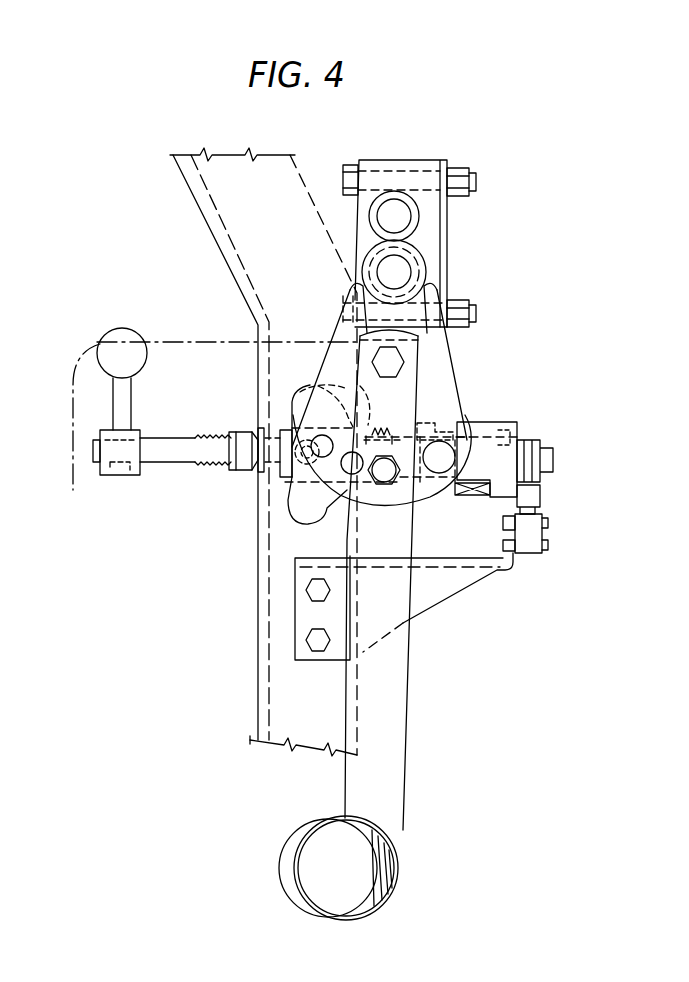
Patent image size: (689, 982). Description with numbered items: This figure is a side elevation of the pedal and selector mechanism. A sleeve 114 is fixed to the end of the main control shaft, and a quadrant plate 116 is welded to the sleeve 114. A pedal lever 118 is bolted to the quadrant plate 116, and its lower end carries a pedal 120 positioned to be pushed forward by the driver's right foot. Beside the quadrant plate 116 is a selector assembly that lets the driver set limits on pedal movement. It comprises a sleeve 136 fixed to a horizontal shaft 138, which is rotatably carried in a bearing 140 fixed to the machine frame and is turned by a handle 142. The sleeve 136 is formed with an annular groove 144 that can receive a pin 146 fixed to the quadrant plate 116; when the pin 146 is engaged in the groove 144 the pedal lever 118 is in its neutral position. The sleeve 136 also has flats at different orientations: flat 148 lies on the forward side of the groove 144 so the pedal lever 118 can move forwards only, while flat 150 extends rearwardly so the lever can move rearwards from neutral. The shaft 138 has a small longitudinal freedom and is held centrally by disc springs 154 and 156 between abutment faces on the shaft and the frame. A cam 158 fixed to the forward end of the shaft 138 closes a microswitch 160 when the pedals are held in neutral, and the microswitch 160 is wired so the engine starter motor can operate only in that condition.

The sleeve 114 is at (427, 272).
The quadrant plate 116 is at (440, 378).
The pedal lever 118 is at (397, 705).
The pedal 120 is at (295, 865).
The sleeve 136 is at (475, 425).
The horizontal shaft 138 is at (175, 460).
The bearing 140 is at (304, 514).
The handle 142 is at (118, 328).
The annular groove 144 is at (455, 403).
The pin 146 is at (442, 463).
The flat 148 is at (479, 497).
The flat 150 is at (453, 395).
The disc spring 154 is at (352, 384).
The disc spring 156 is at (263, 427).
The cam 158 is at (528, 495).
The microswitch 160 is at (525, 535).